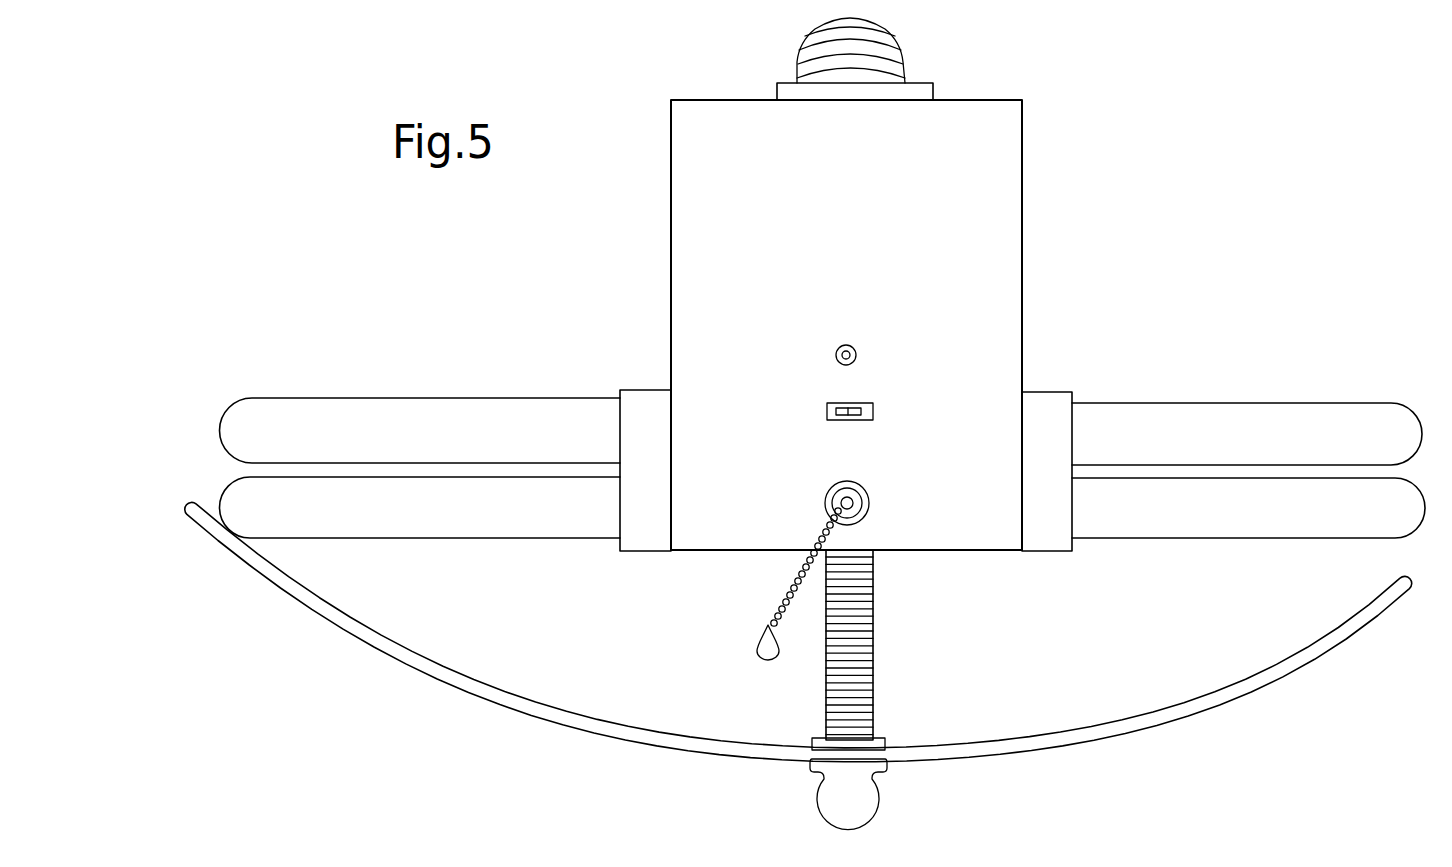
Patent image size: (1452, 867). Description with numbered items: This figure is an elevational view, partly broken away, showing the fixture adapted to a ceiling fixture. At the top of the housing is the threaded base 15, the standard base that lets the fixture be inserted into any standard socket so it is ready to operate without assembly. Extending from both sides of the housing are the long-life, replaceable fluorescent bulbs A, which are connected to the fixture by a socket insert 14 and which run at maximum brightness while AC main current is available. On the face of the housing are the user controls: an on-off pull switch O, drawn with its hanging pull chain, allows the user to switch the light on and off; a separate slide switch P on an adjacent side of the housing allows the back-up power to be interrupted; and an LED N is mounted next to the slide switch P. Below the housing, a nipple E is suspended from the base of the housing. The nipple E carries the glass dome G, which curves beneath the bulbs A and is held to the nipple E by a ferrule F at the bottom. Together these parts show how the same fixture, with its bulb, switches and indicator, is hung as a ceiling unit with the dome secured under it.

The socket insert 14 is at (574, 770).
The threaded base 15 is at (797, 58).
The fluorescent bulb A is at (516, 398).
The LED N is at (836, 357).
The slide switch P is at (827, 412).
The pull switch O is at (768, 617).
The nipple E is at (873, 650).
The glass dome G is at (482, 698).
The ferrule F is at (828, 823).